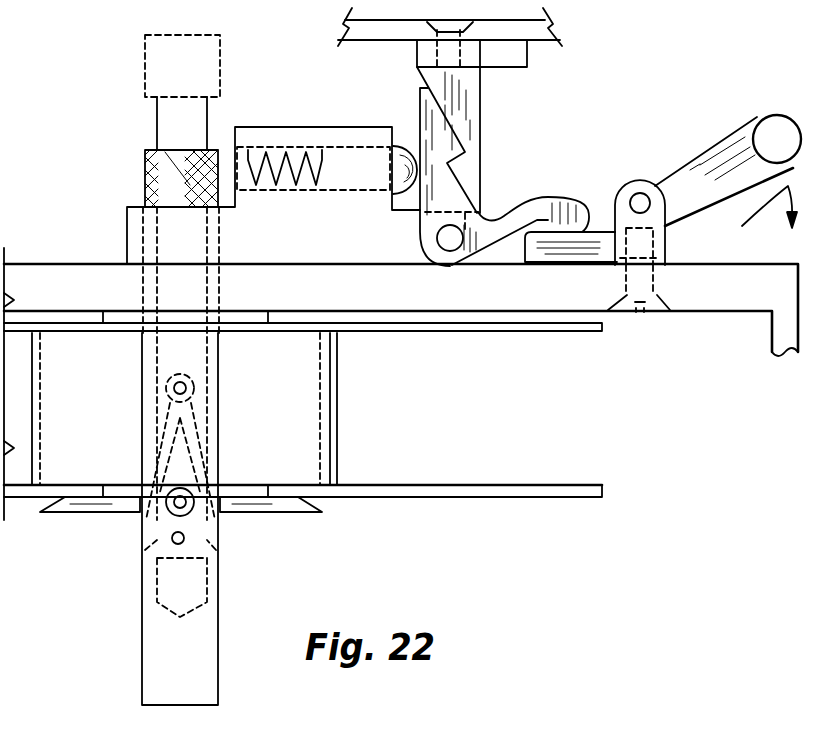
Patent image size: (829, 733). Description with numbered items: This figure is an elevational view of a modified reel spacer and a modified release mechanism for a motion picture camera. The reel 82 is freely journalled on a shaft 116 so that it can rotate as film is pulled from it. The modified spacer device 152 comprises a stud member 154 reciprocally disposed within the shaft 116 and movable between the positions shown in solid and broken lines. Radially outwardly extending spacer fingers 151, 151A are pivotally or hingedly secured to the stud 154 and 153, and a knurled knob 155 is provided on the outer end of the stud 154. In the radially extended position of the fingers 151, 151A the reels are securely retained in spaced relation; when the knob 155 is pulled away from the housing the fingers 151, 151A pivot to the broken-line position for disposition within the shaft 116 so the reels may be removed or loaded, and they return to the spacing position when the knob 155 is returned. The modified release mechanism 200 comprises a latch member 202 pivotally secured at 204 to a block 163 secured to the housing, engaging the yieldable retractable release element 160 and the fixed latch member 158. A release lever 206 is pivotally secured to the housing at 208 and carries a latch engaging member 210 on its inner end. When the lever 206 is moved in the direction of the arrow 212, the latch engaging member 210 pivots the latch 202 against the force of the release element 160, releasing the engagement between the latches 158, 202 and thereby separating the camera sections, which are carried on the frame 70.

The frame 70 is at (399, 337).
The reel 82 is at (500, 496).
The shaft 116 is at (218, 588).
The spacer finger 151 is at (93, 512).
The spacer finger 151A is at (265, 512).
The spacer device 152 is at (124, 572).
The stud 153 is at (183, 497).
The stud member 154 is at (163, 118).
The knurled knob 155 is at (145, 187).
The fixed latch member 158 is at (474, 103).
The retractable release element 160 is at (400, 158).
The block 163 is at (135, 230).
The release mechanism 200 is at (545, 178).
The latch member 202 is at (441, 196).
The pivot 204 is at (450, 238).
The release lever 206 is at (730, 155).
The pivot 208 is at (640, 196).
The latch engaging member 210 is at (587, 242).
The arrow 212 is at (752, 217).